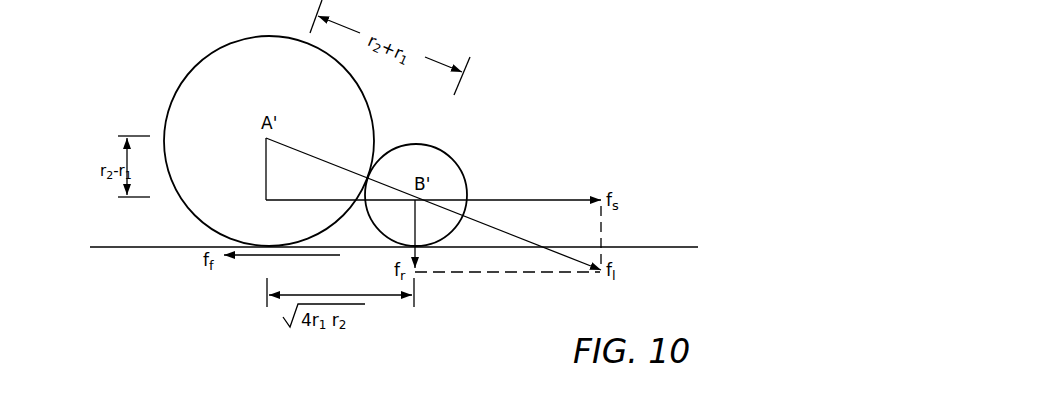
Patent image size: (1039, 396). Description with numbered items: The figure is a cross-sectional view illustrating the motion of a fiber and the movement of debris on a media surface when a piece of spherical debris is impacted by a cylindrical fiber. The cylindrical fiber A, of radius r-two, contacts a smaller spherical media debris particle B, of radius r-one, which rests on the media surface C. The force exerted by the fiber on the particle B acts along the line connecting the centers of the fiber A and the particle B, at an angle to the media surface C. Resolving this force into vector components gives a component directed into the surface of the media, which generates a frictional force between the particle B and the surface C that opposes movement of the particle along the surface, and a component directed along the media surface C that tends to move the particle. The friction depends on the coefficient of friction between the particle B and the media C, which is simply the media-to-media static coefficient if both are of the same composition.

The cylindrical fiber A is at (198, 60).
The spherical media debris particle B is at (454, 156).
The media surface C is at (657, 246).